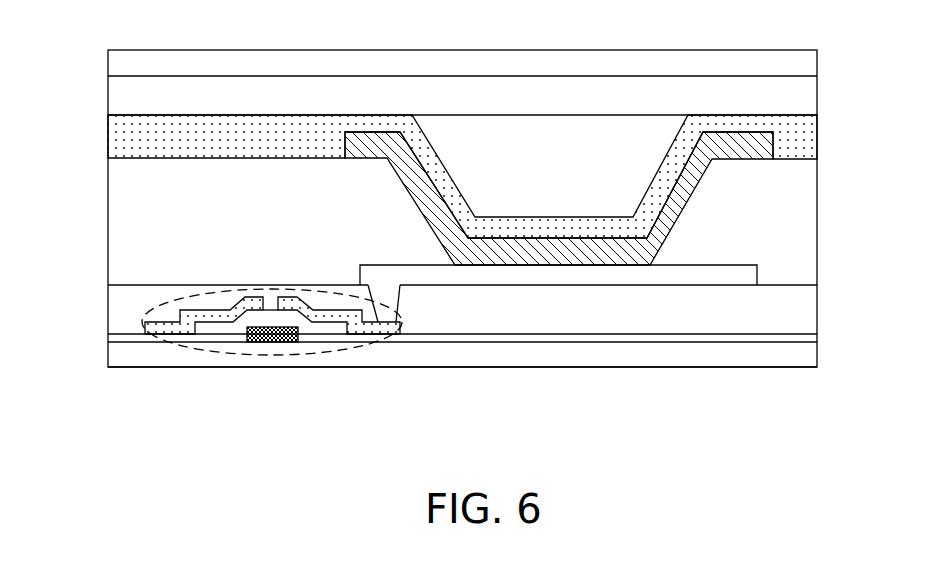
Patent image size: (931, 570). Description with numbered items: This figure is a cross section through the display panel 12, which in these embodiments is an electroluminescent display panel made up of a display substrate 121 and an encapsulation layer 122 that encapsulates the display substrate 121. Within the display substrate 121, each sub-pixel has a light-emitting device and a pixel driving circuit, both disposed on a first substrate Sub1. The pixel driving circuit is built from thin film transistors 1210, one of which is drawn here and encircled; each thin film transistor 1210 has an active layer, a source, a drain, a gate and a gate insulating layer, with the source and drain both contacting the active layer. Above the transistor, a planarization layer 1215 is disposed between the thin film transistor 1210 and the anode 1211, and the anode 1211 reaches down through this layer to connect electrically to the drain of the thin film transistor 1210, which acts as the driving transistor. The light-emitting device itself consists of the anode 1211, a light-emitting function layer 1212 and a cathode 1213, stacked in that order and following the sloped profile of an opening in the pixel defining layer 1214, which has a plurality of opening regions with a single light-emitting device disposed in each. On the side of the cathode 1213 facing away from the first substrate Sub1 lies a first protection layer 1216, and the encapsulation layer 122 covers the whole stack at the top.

The display panel 12 is at (101, 41).
The display substrate 121 is at (823, 76).
The encapsulation layer 122 is at (780, 64).
The first protection layer 1216 is at (780, 97).
The thin film transistor 1210 is at (185, 343).
The anode 1211 is at (512, 272).
The light-emitting function layer 1212 is at (572, 255).
The cathode 1213 is at (622, 232).
The pixel defining layer 1214 is at (772, 235).
The planarization layer 1215 is at (688, 307).
The first substrate Sub1 is at (383, 352).